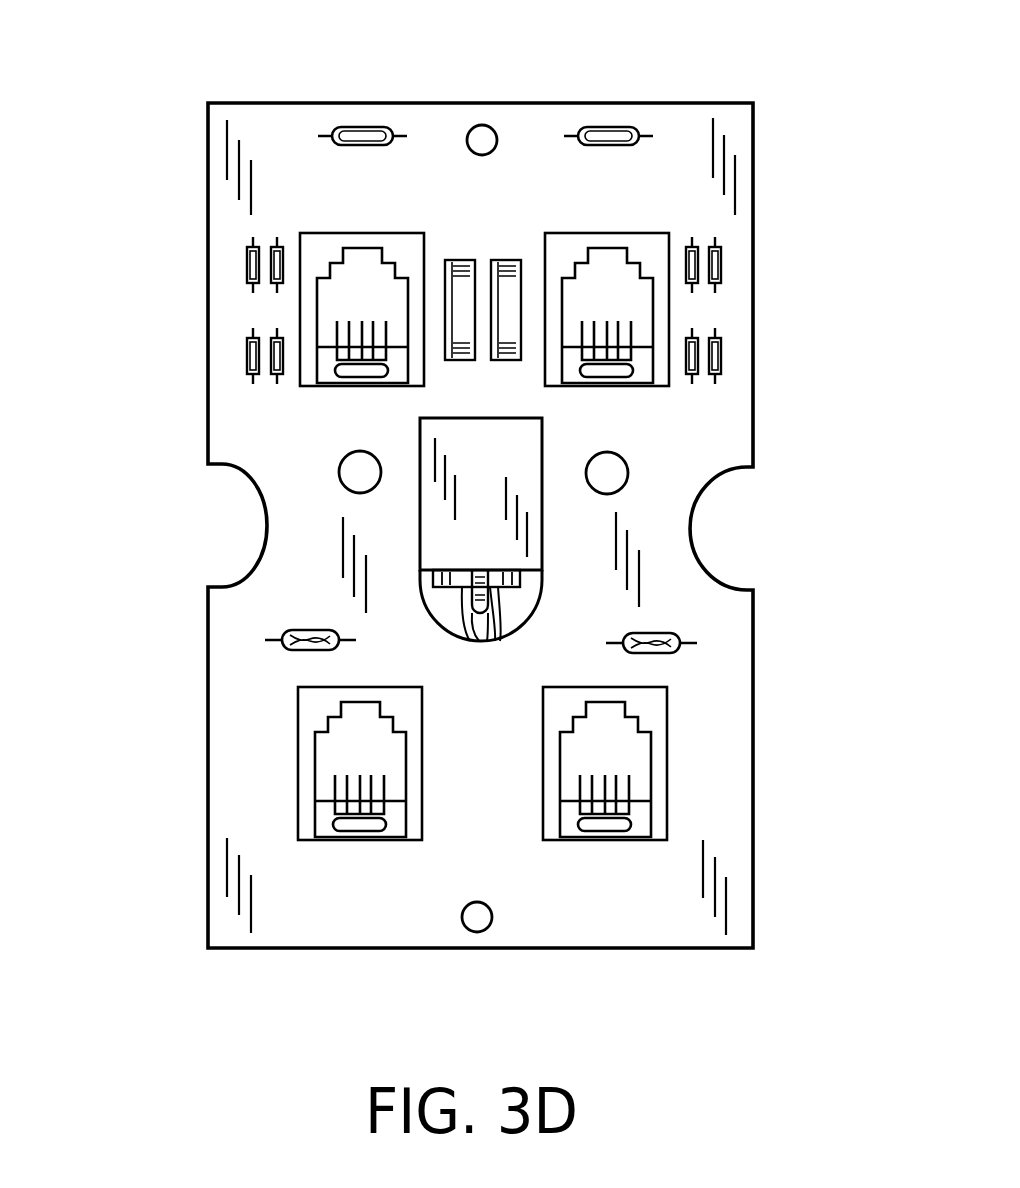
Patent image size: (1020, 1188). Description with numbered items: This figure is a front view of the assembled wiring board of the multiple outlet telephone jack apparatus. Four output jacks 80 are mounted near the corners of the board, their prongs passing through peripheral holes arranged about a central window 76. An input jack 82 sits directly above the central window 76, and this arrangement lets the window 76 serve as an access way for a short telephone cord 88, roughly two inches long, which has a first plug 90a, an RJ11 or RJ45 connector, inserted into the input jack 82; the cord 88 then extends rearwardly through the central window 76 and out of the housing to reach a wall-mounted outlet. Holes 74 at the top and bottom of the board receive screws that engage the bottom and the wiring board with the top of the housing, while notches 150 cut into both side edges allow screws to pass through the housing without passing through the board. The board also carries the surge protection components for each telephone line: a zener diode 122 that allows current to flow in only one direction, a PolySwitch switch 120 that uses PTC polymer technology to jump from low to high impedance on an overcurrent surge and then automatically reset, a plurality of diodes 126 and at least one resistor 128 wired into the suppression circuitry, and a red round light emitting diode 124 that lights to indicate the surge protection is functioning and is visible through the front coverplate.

The holes 74 is at (478, 932).
The central window 76 is at (512, 610).
The output jacks 80 is at (605, 283).
The input jack 82 is at (500, 468).
The telephone cord 88 is at (472, 622).
The first plug 90a is at (520, 580).
The switch 120 is at (510, 262).
The zener diode 122 is at (369, 127).
The light emitting diode 124 is at (340, 460).
The diodes 126 is at (252, 247).
The resistor 128 is at (287, 632).
The notches 150 is at (267, 518).